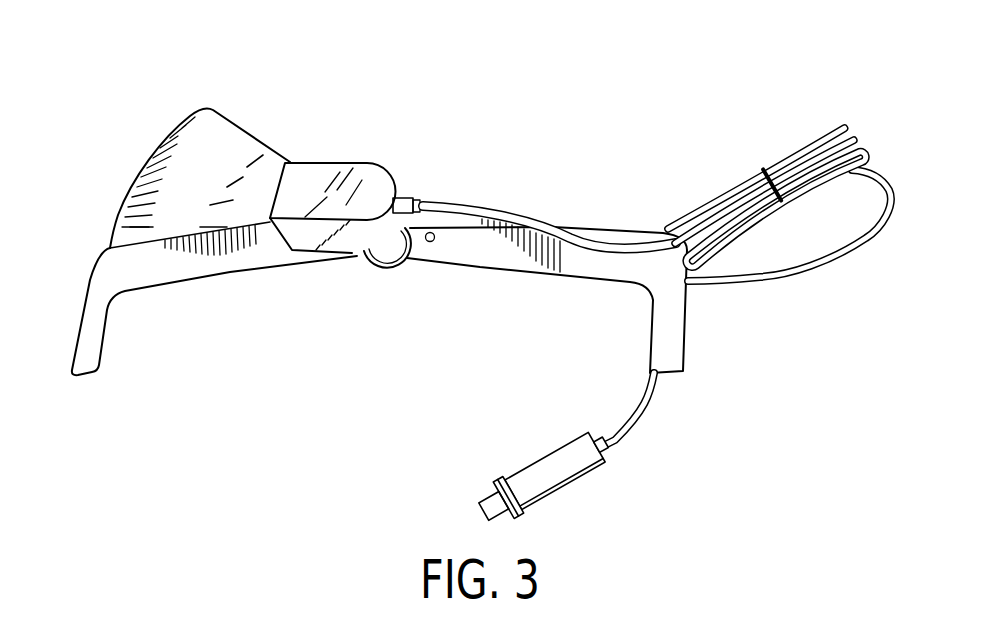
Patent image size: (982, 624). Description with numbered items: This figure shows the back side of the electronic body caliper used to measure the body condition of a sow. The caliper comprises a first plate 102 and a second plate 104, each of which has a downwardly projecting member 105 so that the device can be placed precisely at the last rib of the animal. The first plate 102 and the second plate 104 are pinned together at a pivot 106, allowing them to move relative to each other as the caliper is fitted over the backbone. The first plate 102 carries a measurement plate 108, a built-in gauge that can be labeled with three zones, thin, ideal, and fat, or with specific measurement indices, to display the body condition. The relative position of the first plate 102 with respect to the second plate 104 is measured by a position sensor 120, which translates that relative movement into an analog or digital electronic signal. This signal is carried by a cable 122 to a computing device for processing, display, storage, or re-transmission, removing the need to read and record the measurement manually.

The first plate 102 is at (311, 142).
The second plate 104 is at (620, 233).
The downwardly projecting member 105 is at (88, 335).
The pivot 106 is at (418, 198).
The measurement plate 108 is at (188, 182).
The position sensor 120 is at (397, 277).
The cable 122 is at (875, 172).